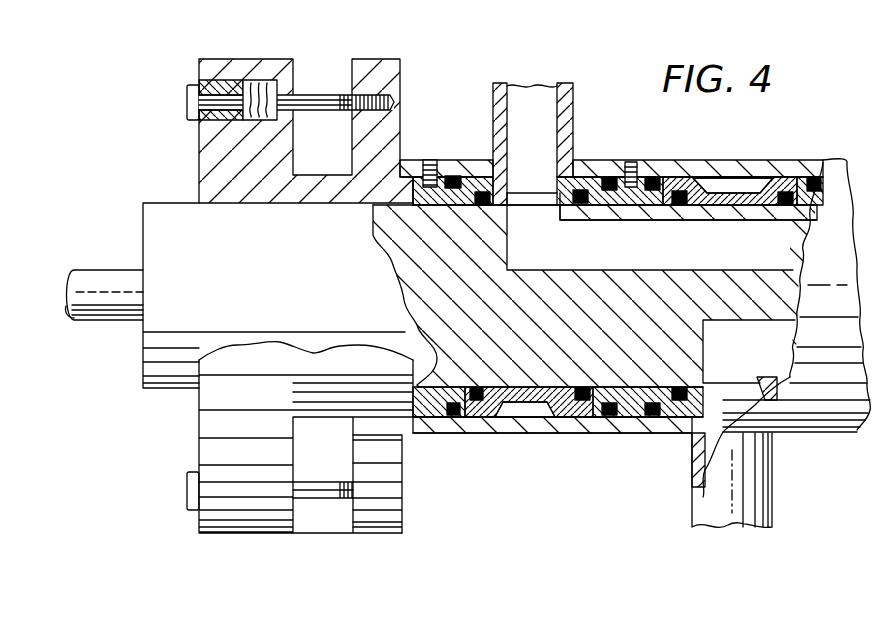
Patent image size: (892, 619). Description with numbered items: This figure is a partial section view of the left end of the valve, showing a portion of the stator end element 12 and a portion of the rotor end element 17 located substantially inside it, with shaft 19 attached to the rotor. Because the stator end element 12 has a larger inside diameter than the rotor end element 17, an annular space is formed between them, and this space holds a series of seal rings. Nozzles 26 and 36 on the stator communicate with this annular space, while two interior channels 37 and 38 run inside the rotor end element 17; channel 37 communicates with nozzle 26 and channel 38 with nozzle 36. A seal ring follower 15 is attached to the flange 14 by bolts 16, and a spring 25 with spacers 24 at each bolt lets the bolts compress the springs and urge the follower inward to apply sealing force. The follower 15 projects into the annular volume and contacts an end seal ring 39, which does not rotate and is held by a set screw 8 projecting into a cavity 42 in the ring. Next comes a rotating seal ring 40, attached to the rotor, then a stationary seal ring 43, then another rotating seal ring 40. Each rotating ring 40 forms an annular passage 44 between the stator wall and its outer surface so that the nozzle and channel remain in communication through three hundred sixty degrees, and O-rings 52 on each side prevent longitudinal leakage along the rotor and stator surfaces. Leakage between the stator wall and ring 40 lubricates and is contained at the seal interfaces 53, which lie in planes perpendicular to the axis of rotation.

The set screw 8 is at (432, 175).
The stator end element 12 is at (840, 162).
The flange 14 is at (372, 58).
The seal ring follower 15 is at (243, 58).
The bolt 16 is at (186, 92).
The rotor end element 17 is at (166, 203).
The shaft 19 is at (112, 270).
The spacer 24 is at (213, 120).
The spring 25 is at (266, 120).
The nozzle 26 is at (573, 100).
The nozzle 36 is at (772, 478).
The interior channel 37 is at (527, 262).
The interior channel 38 is at (770, 352).
The end seal ring 39 is at (415, 207).
The rotating seal ring 40 is at (498, 205).
The cavity 42 is at (428, 160).
The stationary seal ring 43 is at (643, 192).
The annular passage 44 is at (520, 187).
The O-ring 52 is at (452, 176).
The seal interface 53 is at (805, 178).